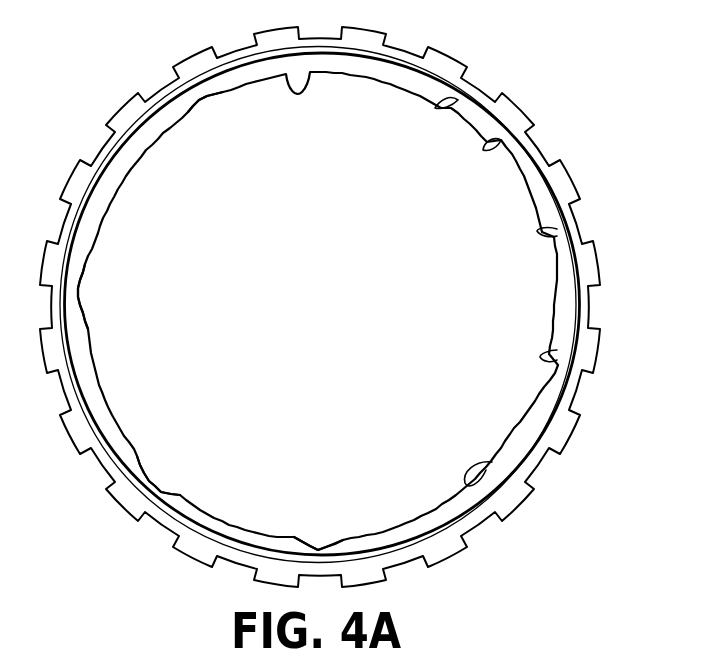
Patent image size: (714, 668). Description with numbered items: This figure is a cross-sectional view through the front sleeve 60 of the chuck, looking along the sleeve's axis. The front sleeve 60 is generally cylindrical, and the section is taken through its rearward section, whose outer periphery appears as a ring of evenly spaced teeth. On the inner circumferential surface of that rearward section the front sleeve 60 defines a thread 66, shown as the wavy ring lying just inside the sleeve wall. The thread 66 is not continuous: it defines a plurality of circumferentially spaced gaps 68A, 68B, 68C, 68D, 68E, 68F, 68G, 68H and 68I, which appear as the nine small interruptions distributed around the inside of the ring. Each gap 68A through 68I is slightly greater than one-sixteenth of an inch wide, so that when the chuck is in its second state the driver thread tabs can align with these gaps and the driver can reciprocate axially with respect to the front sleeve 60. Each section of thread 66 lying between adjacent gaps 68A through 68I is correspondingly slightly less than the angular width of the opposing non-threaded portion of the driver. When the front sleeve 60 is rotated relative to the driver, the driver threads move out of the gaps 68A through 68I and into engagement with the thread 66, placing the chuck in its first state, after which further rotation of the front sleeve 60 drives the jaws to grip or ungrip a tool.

The front sleeve 60 is at (540, 150).
The thread 66 is at (310, 93).
The gap 68A is at (450, 100).
The gap 68B is at (492, 143).
The gap 68C is at (540, 231).
The gap 68D is at (545, 355).
The gap 68E is at (478, 466).
The gap 68F is at (322, 548).
The gap 68G is at (147, 477).
The gap 68H is at (77, 291).
The gap 68I is at (203, 97).